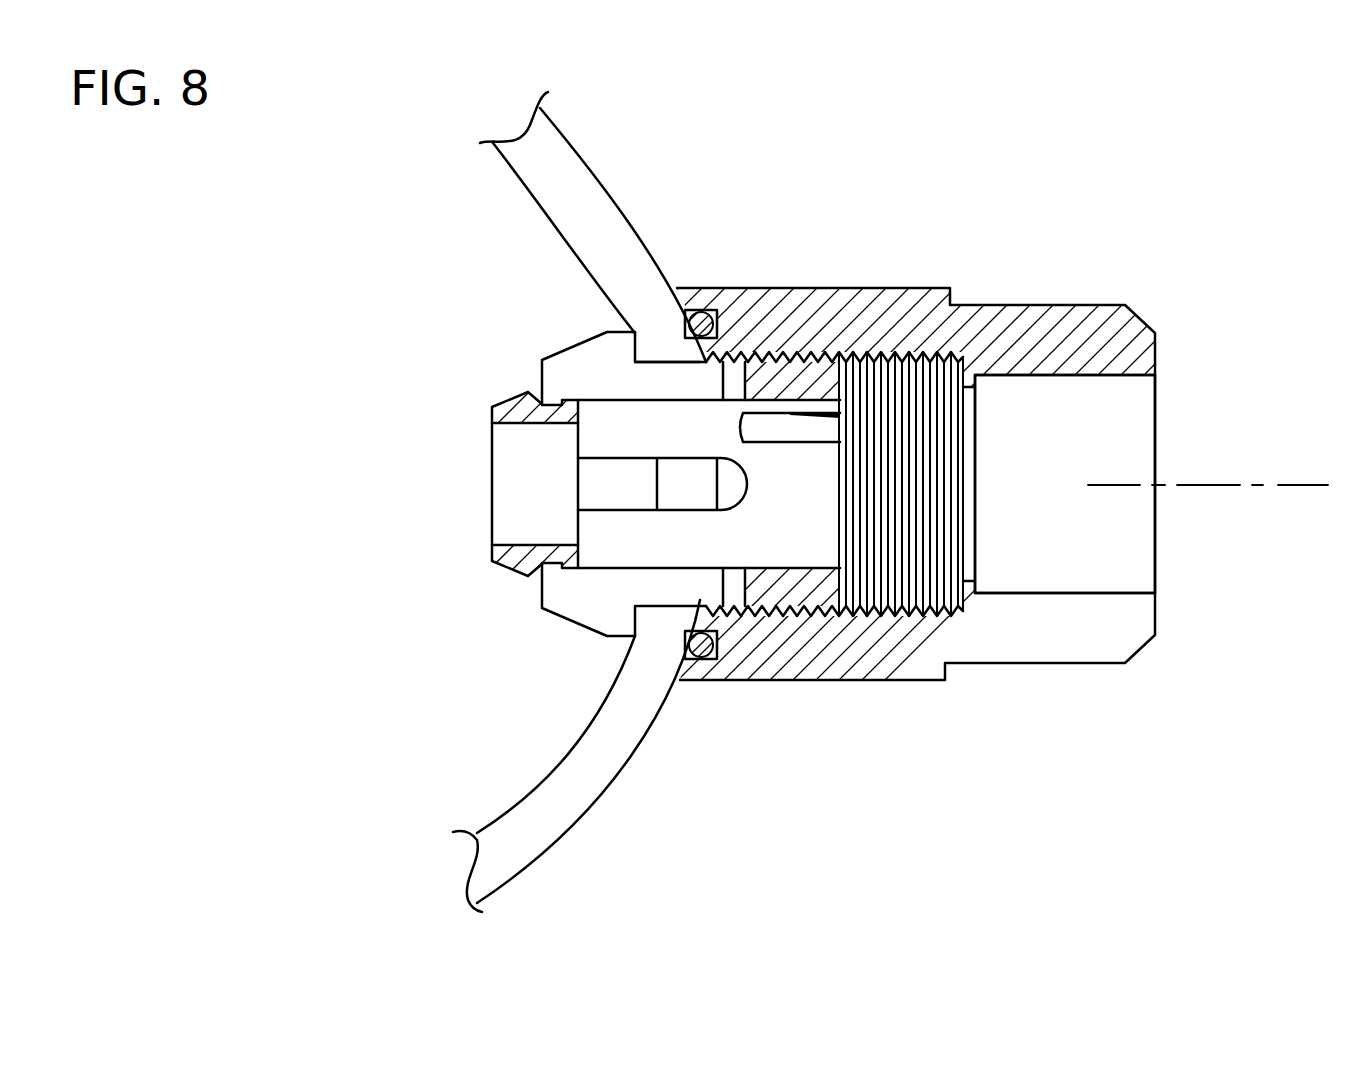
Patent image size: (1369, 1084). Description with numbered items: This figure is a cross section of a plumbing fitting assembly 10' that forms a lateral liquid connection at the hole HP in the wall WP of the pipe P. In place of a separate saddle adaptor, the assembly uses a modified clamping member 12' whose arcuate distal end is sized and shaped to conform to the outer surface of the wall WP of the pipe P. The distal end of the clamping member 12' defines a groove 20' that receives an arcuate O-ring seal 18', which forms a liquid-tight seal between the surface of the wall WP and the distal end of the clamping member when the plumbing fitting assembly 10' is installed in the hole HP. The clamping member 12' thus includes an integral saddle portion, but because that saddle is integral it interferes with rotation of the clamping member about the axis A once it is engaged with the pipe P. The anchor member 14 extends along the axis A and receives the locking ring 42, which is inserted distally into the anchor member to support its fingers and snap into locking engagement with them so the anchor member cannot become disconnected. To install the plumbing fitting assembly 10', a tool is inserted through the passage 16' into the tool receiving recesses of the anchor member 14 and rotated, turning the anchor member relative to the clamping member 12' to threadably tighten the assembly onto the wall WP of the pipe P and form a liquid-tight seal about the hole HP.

The plumbing fitting assembly 10' is at (863, 516).
The clamping member 12' is at (916, 546).
The anchor member 14 is at (565, 625).
The passage 16' is at (1131, 484).
The O-ring seal 18' is at (724, 707).
The groove 20' is at (617, 296).
The locking ring 42 is at (498, 570).
The pipe P is at (630, 192).
The wall of the pipe WP is at (522, 860).
The hole HP is at (660, 363).
The axis A is at (1305, 487).